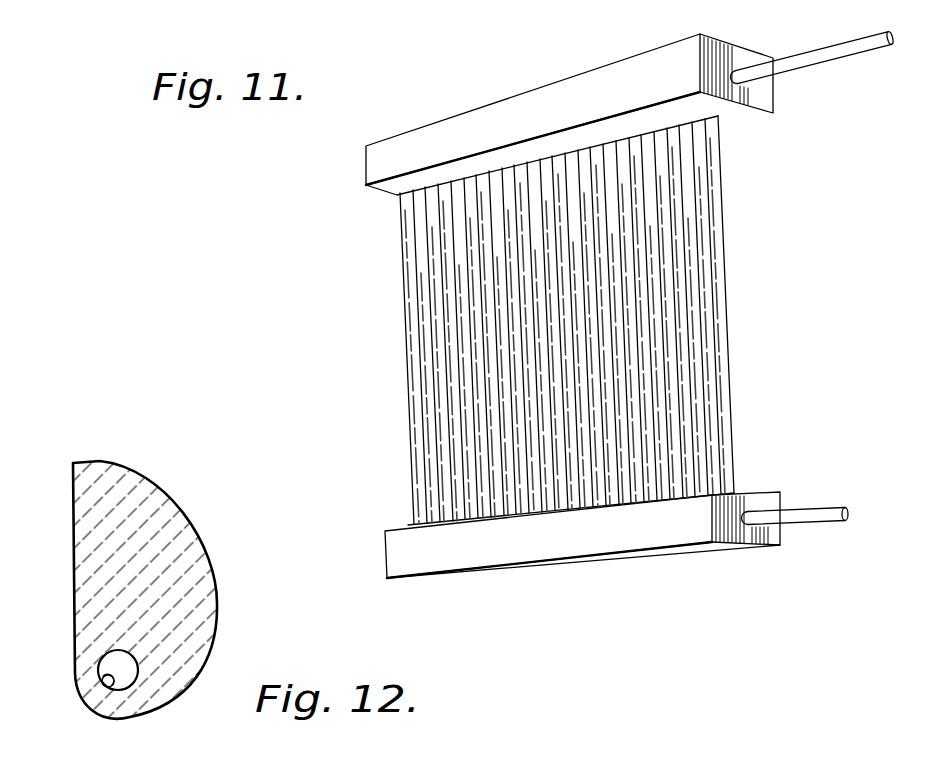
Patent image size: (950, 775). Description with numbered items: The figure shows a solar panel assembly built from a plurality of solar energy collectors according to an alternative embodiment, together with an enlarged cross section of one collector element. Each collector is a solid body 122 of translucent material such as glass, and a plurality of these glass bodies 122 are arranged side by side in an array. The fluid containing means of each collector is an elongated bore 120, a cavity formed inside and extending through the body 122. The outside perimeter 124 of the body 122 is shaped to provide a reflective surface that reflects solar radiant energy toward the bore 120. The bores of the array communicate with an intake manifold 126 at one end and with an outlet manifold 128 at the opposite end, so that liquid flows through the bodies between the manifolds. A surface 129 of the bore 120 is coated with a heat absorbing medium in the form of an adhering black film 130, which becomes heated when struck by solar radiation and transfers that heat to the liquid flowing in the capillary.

In FIG. 12, the bore 120 is at (110, 662).
In FIG. 11, the body 122 is at (322, 300).
In FIG. 12, the body 122 is at (172, 498).
In FIG. 12, the outside perimeter 124 is at (217, 600).
In FIG. 11, the intake manifold 126 is at (636, 546).
In FIG. 11, the outlet manifold 128 is at (551, 87).
In FIG. 12, the surface 129 is at (135, 688).
In FIG. 12, the black film 130 is at (104, 683).